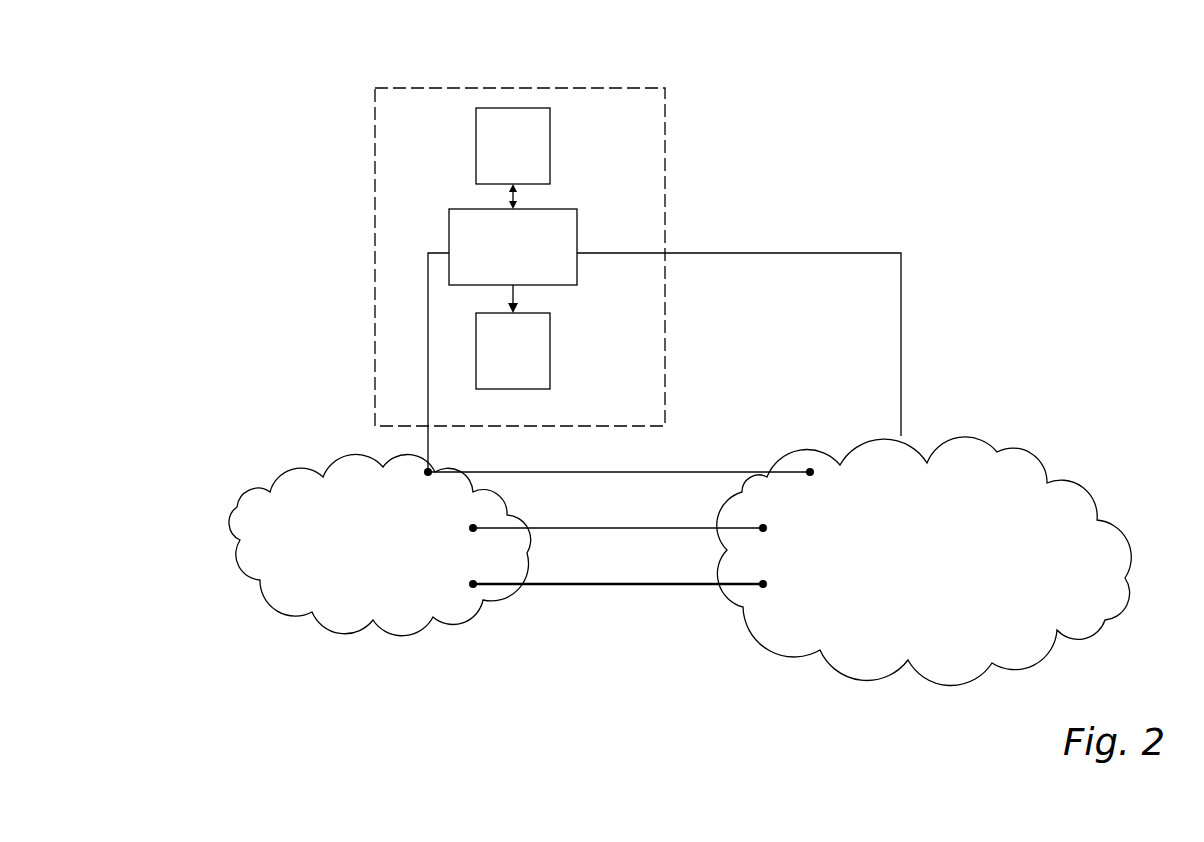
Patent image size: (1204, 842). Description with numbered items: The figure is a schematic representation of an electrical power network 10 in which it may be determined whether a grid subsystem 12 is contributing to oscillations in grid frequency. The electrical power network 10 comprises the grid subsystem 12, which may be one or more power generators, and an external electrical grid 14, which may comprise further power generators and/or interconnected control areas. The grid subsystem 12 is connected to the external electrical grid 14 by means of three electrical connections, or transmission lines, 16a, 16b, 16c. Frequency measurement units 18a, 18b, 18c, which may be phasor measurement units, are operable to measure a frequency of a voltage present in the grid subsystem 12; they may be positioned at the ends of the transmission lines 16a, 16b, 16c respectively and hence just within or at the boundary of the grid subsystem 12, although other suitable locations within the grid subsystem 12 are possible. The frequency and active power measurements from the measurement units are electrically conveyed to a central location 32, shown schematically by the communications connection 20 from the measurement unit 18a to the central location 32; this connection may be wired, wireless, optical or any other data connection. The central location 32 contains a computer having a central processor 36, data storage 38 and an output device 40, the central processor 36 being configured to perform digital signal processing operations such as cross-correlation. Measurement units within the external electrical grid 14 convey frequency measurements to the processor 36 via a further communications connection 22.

The electrical power network 10 is at (941, 175).
The grid subsystem 12 is at (288, 620).
The external electrical grid 14 is at (933, 687).
The electrical connection 16a is at (695, 584).
The electrical connection 16b is at (642, 528).
The electrical connection 16c is at (573, 472).
The frequency measurement unit 18a is at (428, 472).
The frequency measurement unit 18b is at (473, 528).
The frequency measurement unit 18c is at (473, 584).
The communications connection 20 is at (428, 302).
The communications connection 22 is at (901, 333).
The central location 32 is at (627, 86).
The central processor 36 is at (548, 222).
The data storage 38 is at (507, 118).
The output device 40 is at (521, 352).